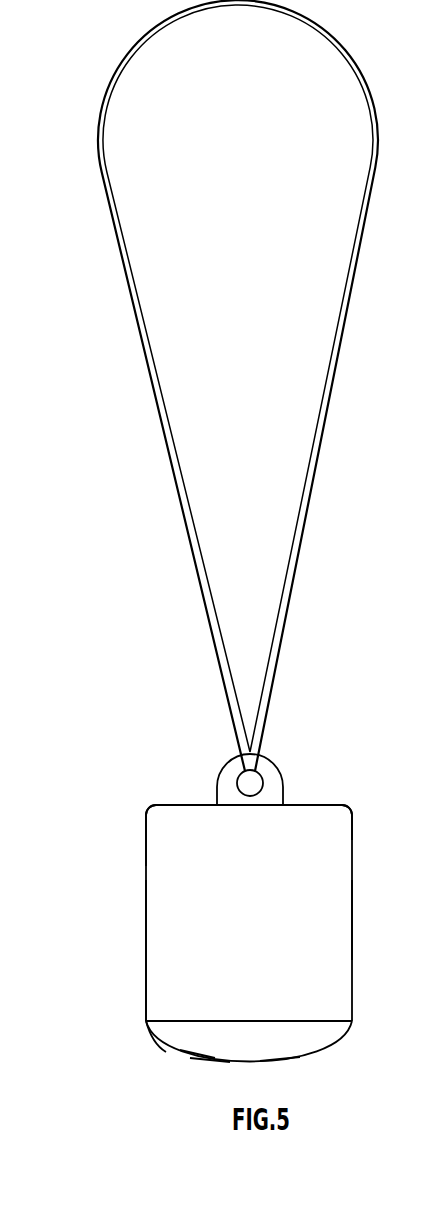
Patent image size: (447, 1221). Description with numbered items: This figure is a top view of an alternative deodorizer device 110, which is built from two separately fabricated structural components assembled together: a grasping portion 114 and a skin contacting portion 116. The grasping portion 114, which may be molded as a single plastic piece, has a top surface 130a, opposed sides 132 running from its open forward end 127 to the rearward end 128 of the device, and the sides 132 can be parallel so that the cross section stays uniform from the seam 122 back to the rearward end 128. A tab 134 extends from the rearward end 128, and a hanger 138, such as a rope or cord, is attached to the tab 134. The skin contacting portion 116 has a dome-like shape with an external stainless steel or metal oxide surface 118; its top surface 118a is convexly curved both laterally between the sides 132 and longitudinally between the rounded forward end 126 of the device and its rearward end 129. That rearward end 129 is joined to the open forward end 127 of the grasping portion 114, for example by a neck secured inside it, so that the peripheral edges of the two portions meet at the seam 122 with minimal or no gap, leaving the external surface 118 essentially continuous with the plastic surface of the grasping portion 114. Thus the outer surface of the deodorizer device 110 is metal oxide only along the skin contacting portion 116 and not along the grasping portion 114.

The deodorizer device 110 is at (116, 935).
The grasping portion 114 is at (139, 966).
The skin contacting portion 116 is at (146, 1047).
The external metal oxide surface 118 is at (334, 1063).
The top surface 118a is at (290, 1047).
The seam 122 is at (326, 1010).
The forward end 126 is at (205, 1060).
The open forward end 127 is at (253, 1022).
The rearward end 128 is at (180, 812).
The rearward end 129 is at (207, 1019).
The top surface 130a is at (322, 914).
The sides 132 is at (146, 866).
The tab 134 is at (275, 785).
The hanger 138 is at (174, 486).